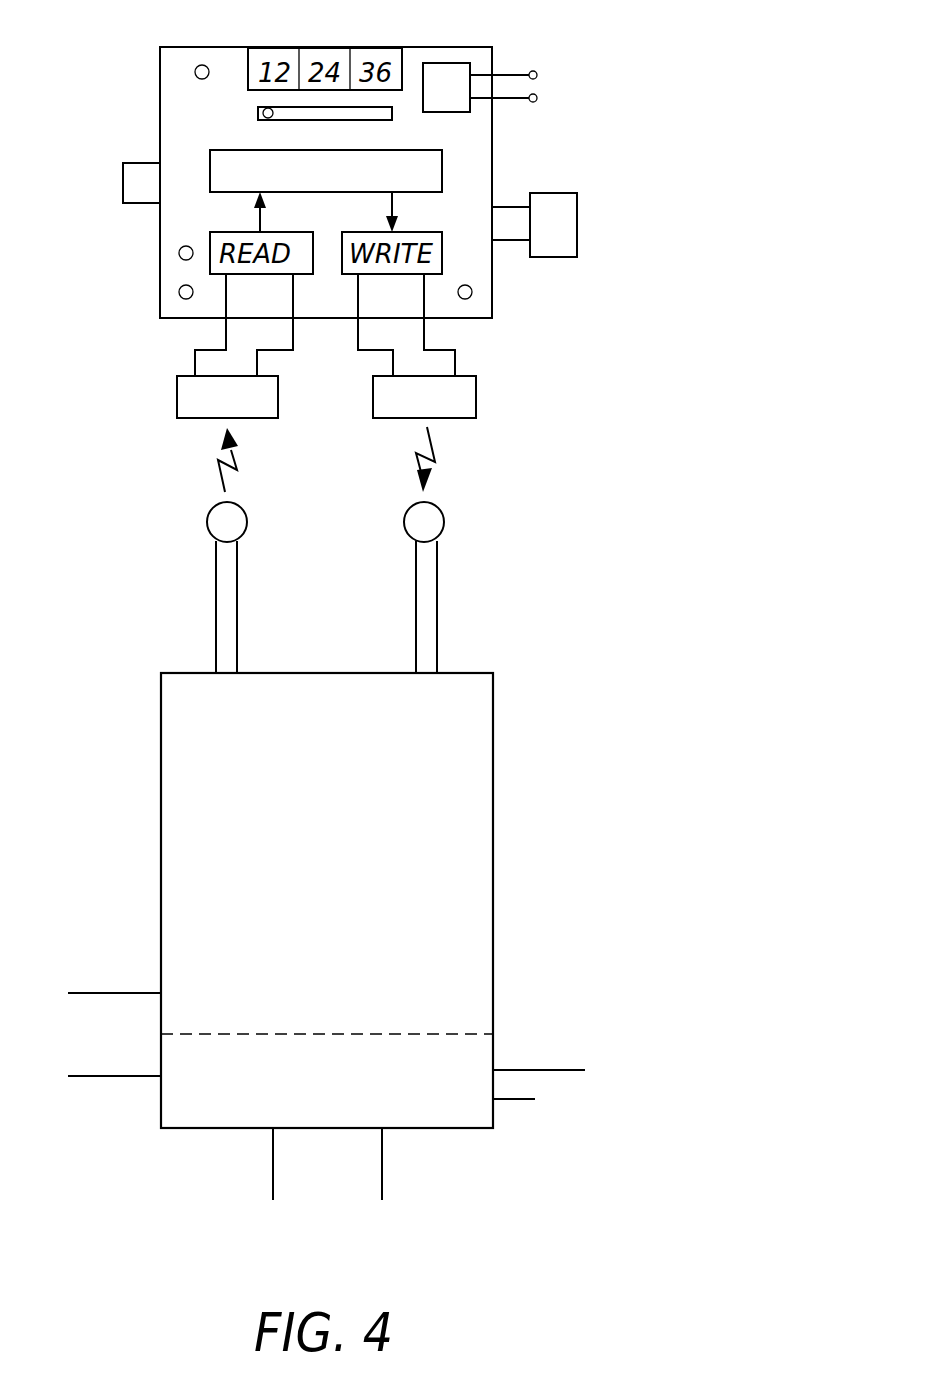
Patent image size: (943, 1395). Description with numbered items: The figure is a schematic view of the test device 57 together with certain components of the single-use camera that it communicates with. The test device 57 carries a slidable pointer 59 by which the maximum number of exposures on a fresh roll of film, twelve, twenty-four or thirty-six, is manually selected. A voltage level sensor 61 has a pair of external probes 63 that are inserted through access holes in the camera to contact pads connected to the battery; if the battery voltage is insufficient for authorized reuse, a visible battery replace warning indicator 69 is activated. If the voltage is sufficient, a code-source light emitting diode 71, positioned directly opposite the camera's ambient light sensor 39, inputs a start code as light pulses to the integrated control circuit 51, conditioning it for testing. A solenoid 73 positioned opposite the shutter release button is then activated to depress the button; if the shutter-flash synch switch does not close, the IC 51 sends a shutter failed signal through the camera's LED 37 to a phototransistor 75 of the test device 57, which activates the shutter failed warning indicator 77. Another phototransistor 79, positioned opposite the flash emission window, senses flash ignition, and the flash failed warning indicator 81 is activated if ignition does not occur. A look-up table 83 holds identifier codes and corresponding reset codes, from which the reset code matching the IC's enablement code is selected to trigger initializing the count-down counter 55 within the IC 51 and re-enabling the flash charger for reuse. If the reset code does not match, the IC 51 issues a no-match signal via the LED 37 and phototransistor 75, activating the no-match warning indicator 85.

The LED 37 is at (208, 520).
The ambient light sensor 39 is at (444, 525).
The integrated control circuit 51 is at (160, 730).
The count-down counter 55 is at (187, 1088).
The test device 57 is at (135, 126).
The pointer 59 is at (263, 115).
The voltage level sensor 61 is at (456, 62).
The external probes 63 is at (537, 75).
The battery replace warning indicator 69 is at (195, 74).
The code-source light emitting diode 71 is at (476, 398).
The solenoid 73 is at (122, 178).
The phototransistor 75 is at (177, 398).
The shutter failed warning indicator 77 is at (178, 253).
The phototransistor 79 is at (577, 222).
The flash failed warning indicator 81 is at (178, 292).
The look-up table 83 is at (442, 168).
The no-match warning indicator 85 is at (472, 295).